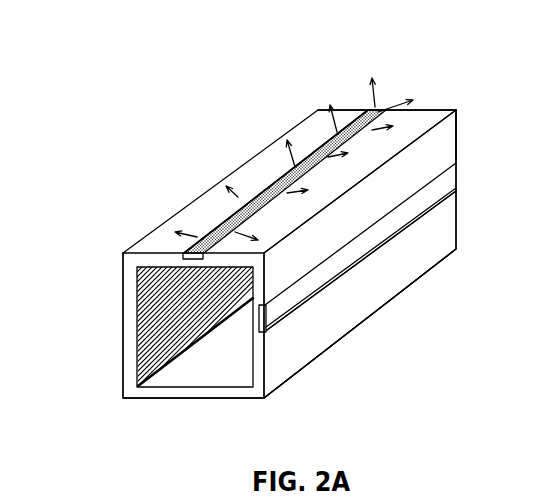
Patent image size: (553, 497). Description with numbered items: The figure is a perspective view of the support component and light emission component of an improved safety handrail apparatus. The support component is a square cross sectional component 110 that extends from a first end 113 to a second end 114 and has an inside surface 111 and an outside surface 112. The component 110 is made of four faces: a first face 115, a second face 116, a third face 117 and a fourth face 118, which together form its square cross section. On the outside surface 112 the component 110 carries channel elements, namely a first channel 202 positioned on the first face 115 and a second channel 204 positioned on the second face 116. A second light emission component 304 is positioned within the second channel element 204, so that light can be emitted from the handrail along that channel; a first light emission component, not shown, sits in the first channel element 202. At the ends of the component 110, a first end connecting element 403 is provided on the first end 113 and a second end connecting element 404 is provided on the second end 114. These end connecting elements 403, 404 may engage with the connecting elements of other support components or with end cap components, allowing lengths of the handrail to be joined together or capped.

The square cross sectional component 110 is at (200, 218).
The inside surface 111 is at (150, 308).
The outside surface 112 is at (348, 313).
The first end 113 is at (169, 393).
The second end 114 is at (456, 139).
The first face 115 is at (443, 234).
The second face 116 is at (283, 155).
The third face 117 is at (137, 285).
The fourth face 118 is at (218, 366).
The first channel 202 is at (440, 190).
The second channel 204 is at (375, 107).
The second light emission component 304 is at (250, 200).
The first end connecting element 403 is at (262, 372).
The second end connecting element 404 is at (457, 111).